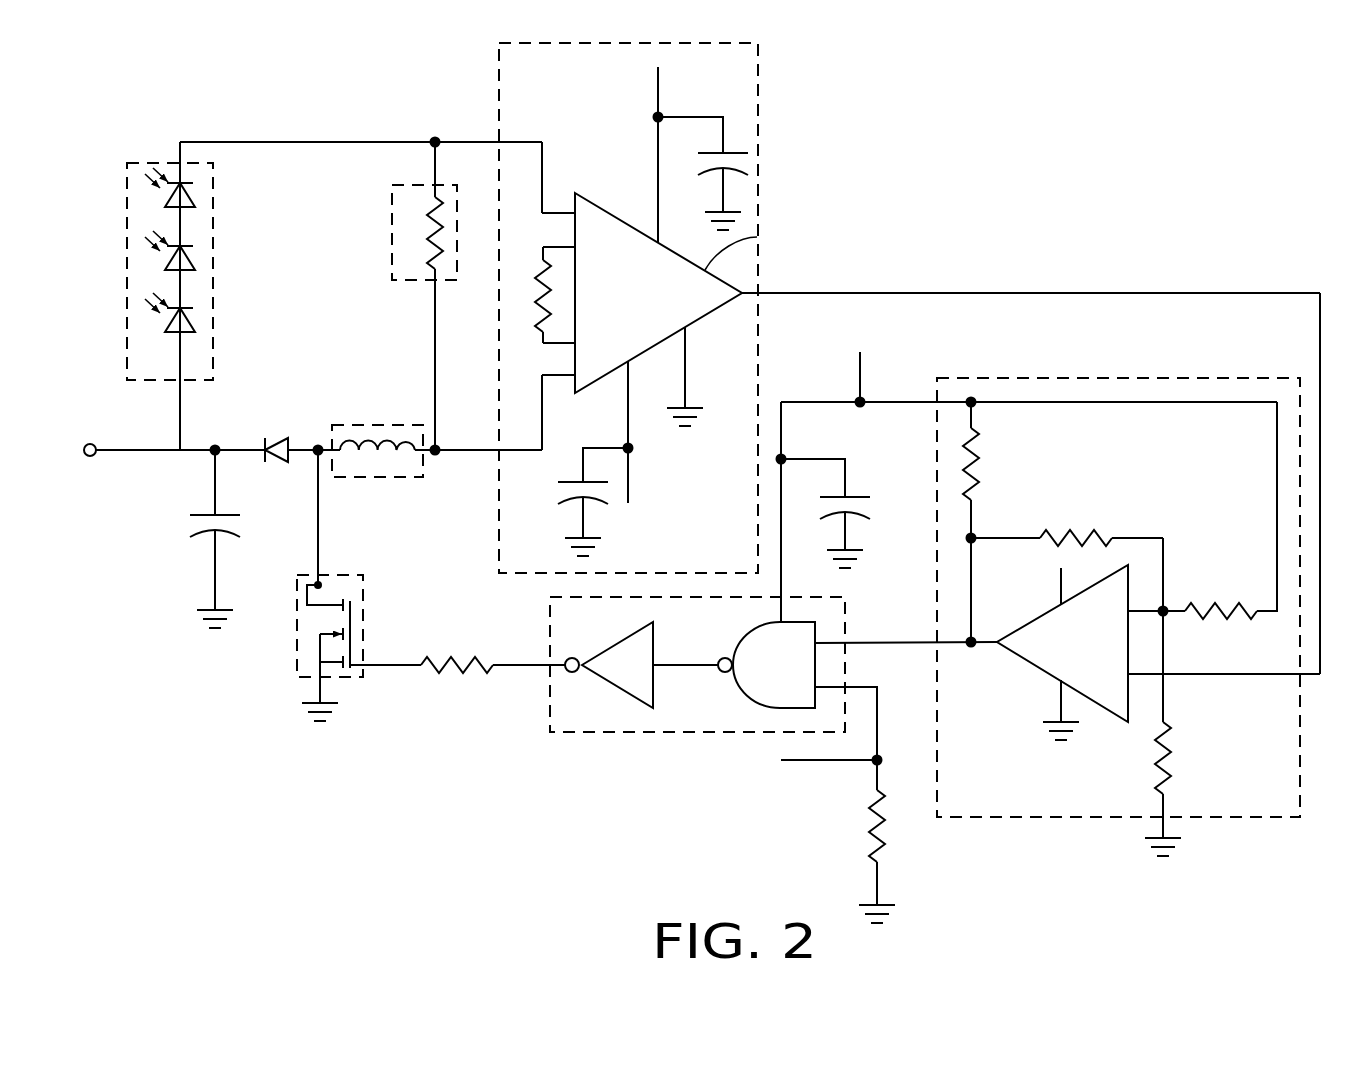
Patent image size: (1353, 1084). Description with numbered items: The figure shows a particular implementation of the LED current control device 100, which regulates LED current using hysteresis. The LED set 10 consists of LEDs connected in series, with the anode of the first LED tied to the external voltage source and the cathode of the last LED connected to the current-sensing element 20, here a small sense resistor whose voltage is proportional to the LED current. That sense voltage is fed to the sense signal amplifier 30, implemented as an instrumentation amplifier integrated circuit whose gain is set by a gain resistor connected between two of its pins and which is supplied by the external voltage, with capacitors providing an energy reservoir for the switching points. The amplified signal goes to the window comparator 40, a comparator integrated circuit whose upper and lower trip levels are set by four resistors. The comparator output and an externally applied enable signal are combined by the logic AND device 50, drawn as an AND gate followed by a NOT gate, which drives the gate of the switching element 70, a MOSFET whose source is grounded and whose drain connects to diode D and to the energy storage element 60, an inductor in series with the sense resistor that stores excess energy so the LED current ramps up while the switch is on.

The LED current control device 100 is at (1110, 111).
The LED set 10 is at (213, 190).
The current-sensing element 20 is at (392, 258).
The sense signal amplifier 30 is at (758, 73).
The window comparator 40 is at (1052, 818).
The logic AND device 50 is at (605, 735).
The energy storage element 60 is at (390, 420).
The switching element 70 is at (365, 602).